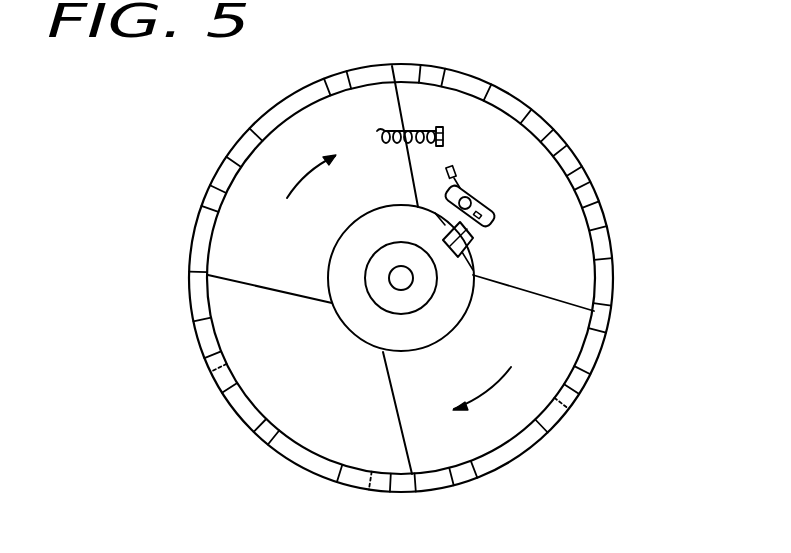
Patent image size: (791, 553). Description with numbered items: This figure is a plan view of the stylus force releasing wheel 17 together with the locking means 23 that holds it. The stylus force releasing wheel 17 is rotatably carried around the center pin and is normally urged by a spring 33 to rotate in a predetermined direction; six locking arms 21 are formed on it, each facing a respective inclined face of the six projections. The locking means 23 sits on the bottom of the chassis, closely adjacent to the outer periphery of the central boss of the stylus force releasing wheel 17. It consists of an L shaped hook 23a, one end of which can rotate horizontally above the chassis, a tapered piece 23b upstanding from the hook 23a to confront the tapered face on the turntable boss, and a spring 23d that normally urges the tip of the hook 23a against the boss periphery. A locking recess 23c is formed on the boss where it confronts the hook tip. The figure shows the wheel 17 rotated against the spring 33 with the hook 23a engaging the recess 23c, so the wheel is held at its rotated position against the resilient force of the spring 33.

The stylus force releasing wheel 17 is at (603, 225).
The locking arms 21 is at (458, 70).
The locking means 23 is at (495, 207).
The L shaped hook 23a is at (471, 243).
The tapered piece 23b is at (487, 238).
The locking recess 23c is at (463, 253).
The spring 23d is at (475, 197).
The spring 33 is at (410, 127).